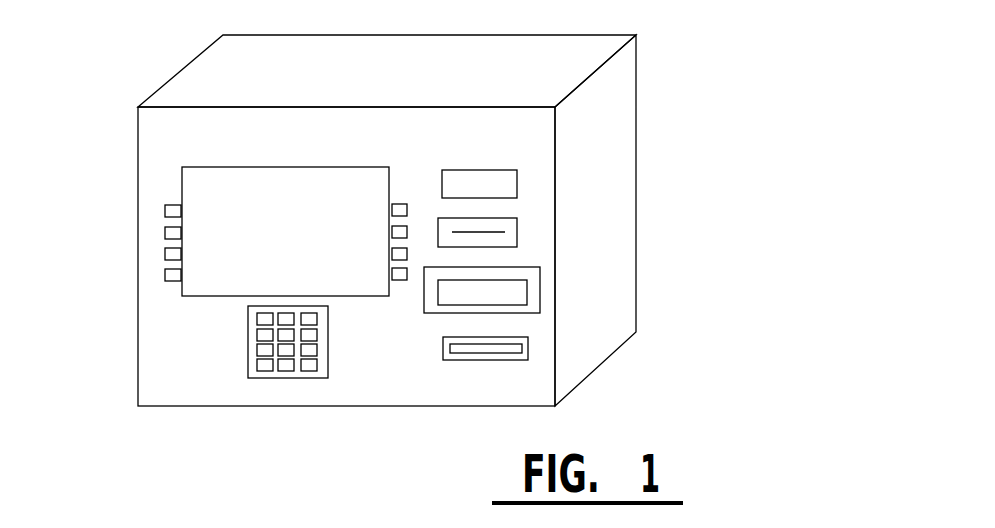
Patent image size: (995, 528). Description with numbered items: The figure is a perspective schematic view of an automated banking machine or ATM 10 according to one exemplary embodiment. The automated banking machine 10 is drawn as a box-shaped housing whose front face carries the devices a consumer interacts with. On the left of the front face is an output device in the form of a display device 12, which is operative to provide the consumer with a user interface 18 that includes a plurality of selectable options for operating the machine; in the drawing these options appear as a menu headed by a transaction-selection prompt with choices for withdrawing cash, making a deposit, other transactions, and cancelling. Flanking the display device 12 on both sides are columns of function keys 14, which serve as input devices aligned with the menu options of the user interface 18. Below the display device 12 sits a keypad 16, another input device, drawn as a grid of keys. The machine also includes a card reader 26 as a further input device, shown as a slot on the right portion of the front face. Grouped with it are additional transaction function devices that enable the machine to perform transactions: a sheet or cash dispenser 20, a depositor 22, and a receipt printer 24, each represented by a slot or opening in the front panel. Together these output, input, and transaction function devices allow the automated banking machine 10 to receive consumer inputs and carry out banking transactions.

The automated banking machine 10 is at (672, 76).
The display device 12 is at (178, 187).
The function keys 14 is at (171, 312).
The keypad 16 is at (268, 378).
The user interface 18 is at (204, 166).
The cash dispenser 20 is at (540, 293).
The depositor 22 is at (528, 348).
The receipt printer 24 is at (517, 183).
The card reader 26 is at (517, 232).